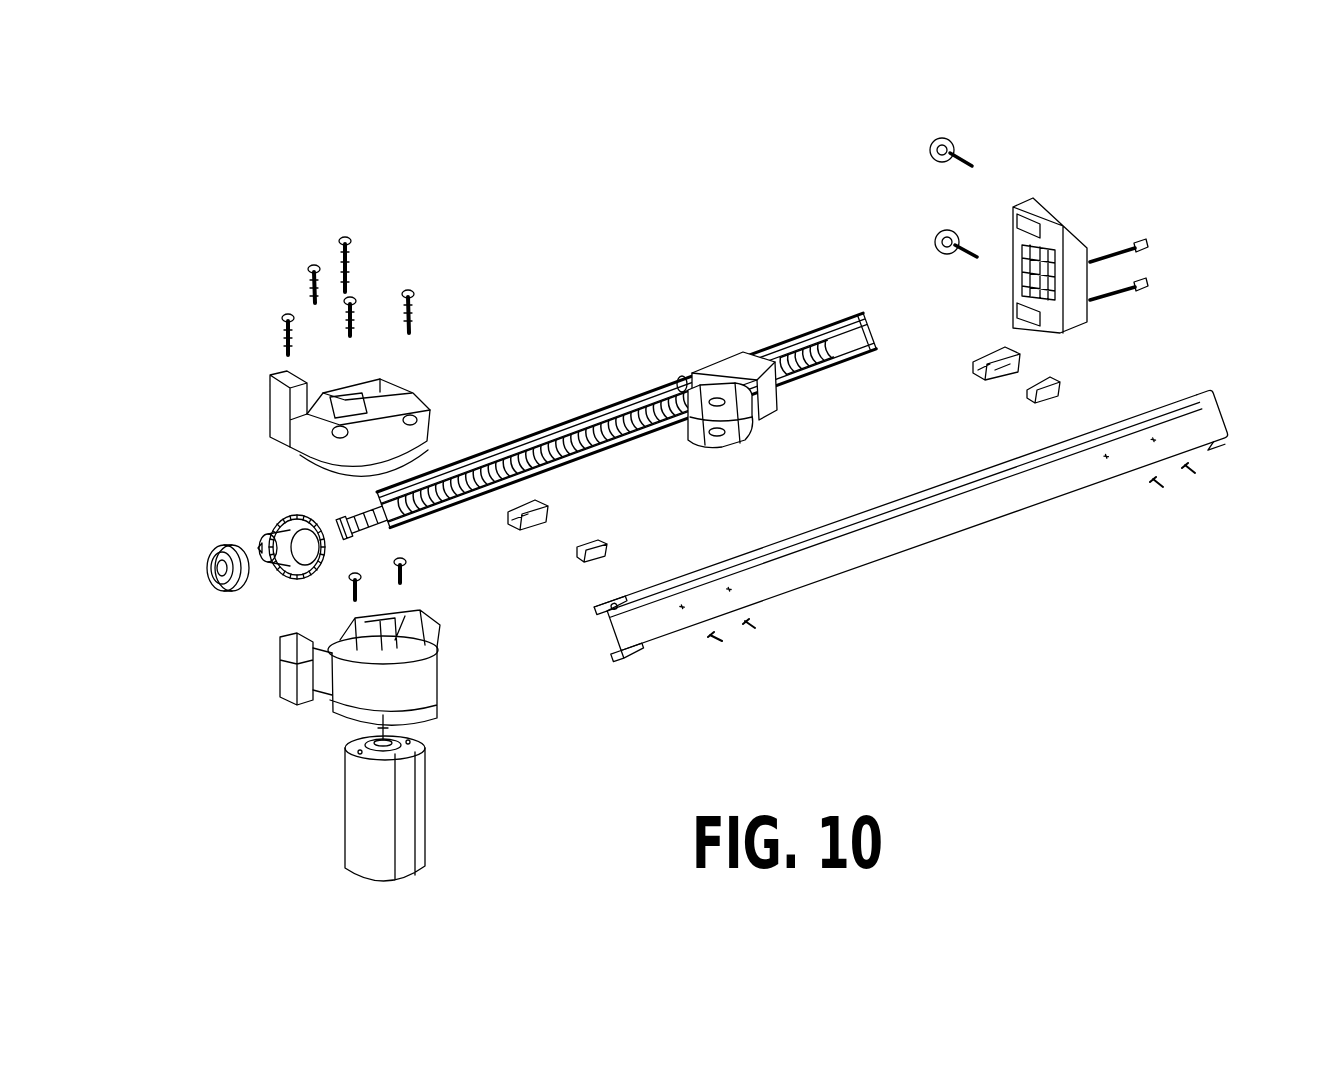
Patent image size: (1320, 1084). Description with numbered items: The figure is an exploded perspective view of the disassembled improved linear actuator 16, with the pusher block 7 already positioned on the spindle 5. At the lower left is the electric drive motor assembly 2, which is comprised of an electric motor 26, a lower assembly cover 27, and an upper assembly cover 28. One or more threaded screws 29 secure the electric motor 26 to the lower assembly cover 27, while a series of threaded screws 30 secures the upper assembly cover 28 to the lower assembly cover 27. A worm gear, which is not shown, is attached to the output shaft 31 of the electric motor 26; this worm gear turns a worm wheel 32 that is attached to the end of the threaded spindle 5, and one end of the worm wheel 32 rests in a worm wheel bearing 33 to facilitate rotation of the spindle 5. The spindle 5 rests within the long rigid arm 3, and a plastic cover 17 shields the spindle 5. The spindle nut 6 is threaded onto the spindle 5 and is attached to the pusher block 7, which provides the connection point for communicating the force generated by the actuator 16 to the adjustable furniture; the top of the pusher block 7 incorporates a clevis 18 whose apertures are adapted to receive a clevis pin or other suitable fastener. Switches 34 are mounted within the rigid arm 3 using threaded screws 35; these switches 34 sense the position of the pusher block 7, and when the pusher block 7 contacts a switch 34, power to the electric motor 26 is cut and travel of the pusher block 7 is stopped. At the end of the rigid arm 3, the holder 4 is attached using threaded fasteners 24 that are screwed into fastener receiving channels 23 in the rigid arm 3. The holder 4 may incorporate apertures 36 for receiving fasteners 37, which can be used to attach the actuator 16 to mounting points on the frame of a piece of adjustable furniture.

The electric drive motor assembly 2 is at (331, 685).
The rigid arm 3 is at (933, 526).
The holder 4 is at (1017, 242).
The spindle 5 is at (643, 438).
The spindle nut 6 is at (675, 367).
The pusher block 7 is at (731, 388).
The linear actuator 16 is at (606, 335).
The plastic cover 17 is at (590, 410).
The clevis 18 is at (716, 447).
The fastener receiving channels 23 is at (1193, 402).
The threaded fasteners 24 is at (1142, 278).
The electric motor 26 is at (357, 802).
The lower assembly cover 27 is at (293, 677).
The upper assembly cover 28 is at (274, 392).
The threaded screws 29 is at (408, 578).
The threaded screws 30 is at (283, 247).
The output shaft 31 is at (360, 733).
The worm wheel 32 is at (278, 523).
The worm wheel bearing 33 is at (210, 571).
The switches 34 is at (547, 502).
The threaded screws 35 is at (1170, 490).
The apertures 36 is at (1013, 220).
The fasteners 37 is at (932, 150).